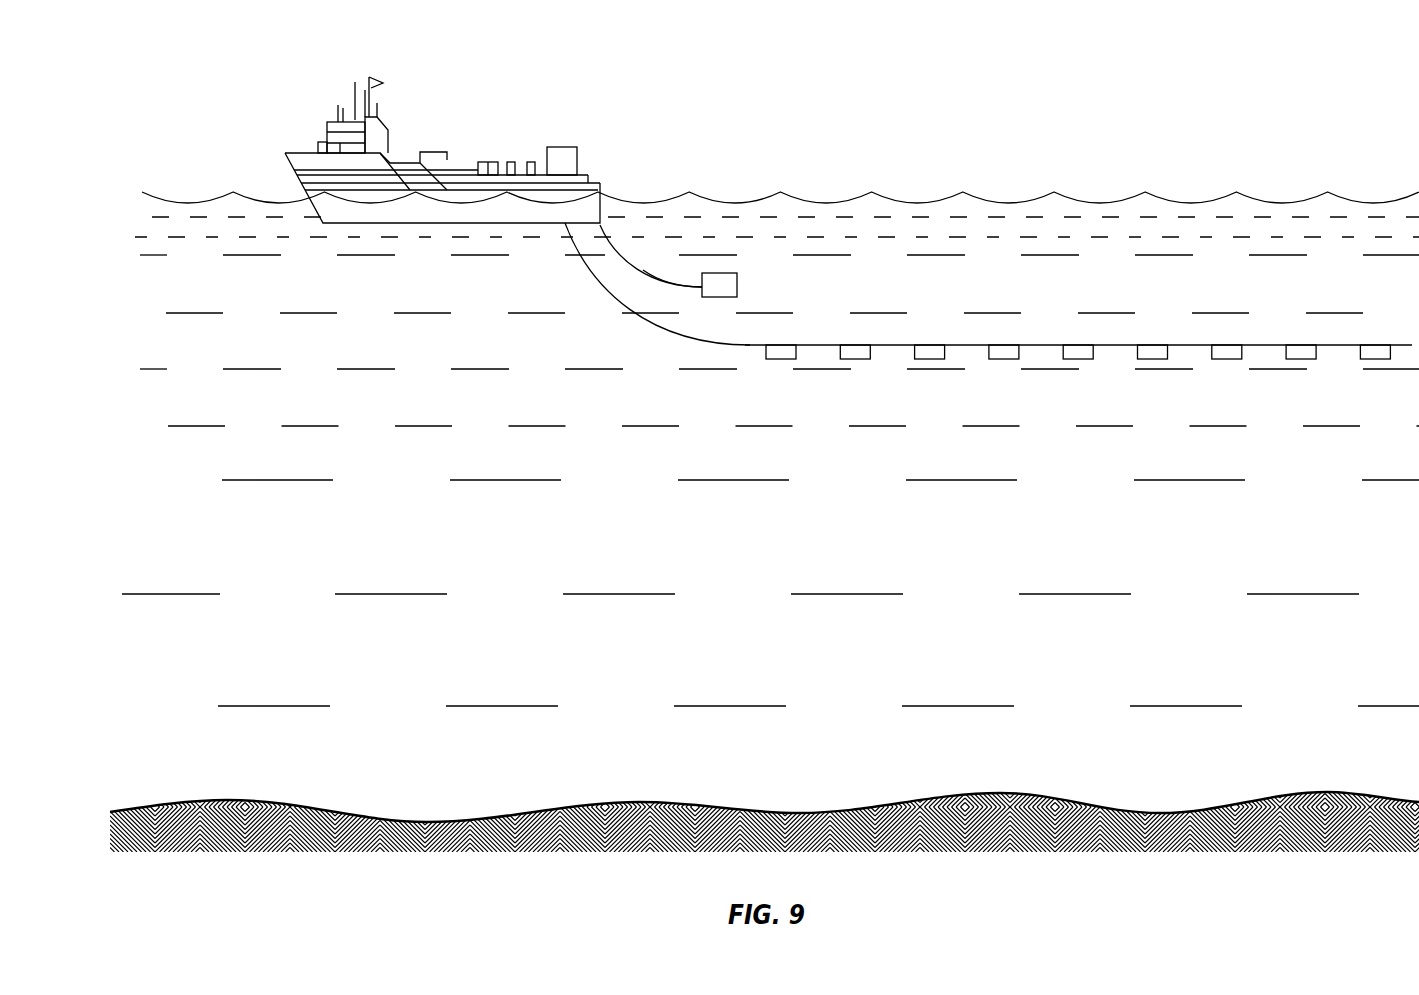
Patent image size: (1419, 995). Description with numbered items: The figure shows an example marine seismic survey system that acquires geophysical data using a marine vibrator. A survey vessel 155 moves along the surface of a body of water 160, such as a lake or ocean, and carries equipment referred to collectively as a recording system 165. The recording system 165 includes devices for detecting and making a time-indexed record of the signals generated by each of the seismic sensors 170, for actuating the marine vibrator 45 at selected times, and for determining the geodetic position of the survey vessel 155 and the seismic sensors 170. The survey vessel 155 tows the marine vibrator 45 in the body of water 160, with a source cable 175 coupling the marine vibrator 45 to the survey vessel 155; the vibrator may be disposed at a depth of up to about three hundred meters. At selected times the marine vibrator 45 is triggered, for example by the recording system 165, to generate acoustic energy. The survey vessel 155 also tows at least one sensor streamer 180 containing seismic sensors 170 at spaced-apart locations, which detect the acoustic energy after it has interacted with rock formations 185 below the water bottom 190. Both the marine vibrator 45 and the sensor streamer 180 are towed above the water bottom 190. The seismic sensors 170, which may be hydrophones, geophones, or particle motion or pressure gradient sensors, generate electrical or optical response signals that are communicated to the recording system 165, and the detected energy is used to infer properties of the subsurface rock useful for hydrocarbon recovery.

The recording system 165 is at (560, 146).
The survey vessel 155 is at (617, 200).
The source cable 175 is at (652, 273).
The marine vibrator 45 is at (720, 273).
The body of water 160 is at (580, 352).
The sensor streamer 180 is at (1032, 345).
The seismic sensors 170 is at (854, 360).
The water bottom 190 is at (1338, 793).
The rock formations 185 is at (1389, 894).